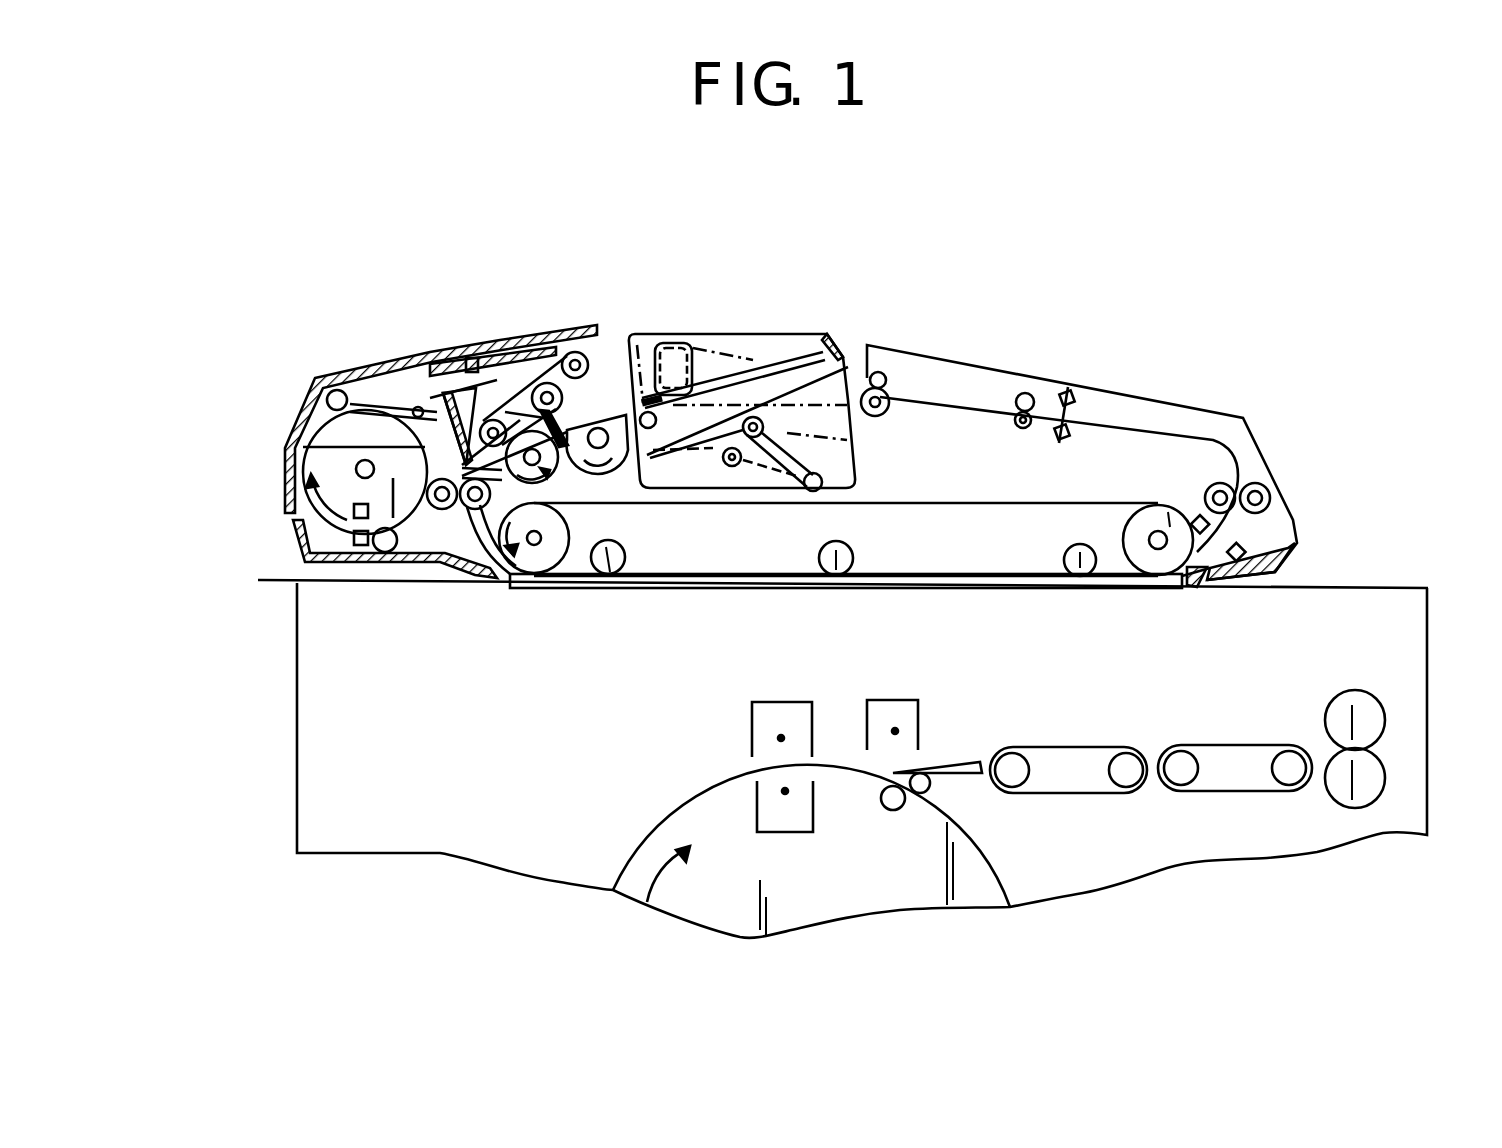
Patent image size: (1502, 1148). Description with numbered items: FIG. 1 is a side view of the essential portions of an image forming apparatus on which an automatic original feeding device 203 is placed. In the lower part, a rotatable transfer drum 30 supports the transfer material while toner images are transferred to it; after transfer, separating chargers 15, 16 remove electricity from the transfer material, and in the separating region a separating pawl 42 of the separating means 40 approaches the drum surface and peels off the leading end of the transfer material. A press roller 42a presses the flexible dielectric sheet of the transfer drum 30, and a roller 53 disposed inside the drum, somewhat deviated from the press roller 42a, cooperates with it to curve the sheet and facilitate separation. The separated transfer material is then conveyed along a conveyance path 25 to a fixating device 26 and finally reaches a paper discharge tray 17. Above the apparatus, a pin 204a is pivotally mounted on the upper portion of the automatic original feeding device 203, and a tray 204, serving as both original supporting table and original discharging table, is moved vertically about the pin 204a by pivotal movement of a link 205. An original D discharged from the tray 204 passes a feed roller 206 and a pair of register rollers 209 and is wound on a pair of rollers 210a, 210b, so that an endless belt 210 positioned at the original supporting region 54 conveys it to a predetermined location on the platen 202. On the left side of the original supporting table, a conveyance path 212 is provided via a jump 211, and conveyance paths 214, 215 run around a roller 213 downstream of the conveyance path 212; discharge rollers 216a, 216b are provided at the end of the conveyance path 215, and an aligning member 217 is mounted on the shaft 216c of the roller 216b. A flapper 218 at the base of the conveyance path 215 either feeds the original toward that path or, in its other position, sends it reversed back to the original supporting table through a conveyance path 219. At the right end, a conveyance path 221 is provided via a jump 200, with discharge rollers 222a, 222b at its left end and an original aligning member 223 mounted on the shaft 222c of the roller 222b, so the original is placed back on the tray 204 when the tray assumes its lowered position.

The separating charger 15 is at (757, 817).
The separating charger 16 is at (782, 702).
The paper discharge tray 17 is at (895, 700).
The conveyance path 25 is at (1287, 703).
The fixating device 26 is at (1360, 697).
The transfer drum 30 is at (1007, 897).
The separating means 40 is at (960, 705).
The separating pawl 42 is at (972, 760).
The press roller 42a is at (928, 792).
The roller 53 is at (893, 810).
The original supporting region 54 is at (735, 588).
The jump 200 is at (1190, 585).
The platen 202 is at (822, 588).
The automatic original feeding device 203 is at (712, 313).
The tray 204 is at (800, 337).
The pin 204a is at (653, 427).
The link 205 is at (840, 475).
The feed roller 206 is at (620, 452).
The register rollers 209 is at (470, 512).
The endless belt 210 is at (1025, 503).
The roller 210a is at (563, 563).
The roller 210b is at (1153, 517).
The jump 211 is at (485, 563).
The conveyance path 212 is at (436, 510).
The roller 213 is at (300, 432).
The conveyance path 214 is at (330, 563).
The conveyance path 215 is at (444, 375).
The discharge roller 216a is at (575, 337).
The discharge roller 216b is at (593, 337).
The shaft 216c is at (553, 333).
The aligning member 217 is at (615, 337).
The flapper 218 is at (427, 455).
The conveyance path 219 is at (303, 448).
The conveyance path 221 is at (1162, 430).
The discharge roller 222a is at (886, 380).
The discharge roller 222b is at (873, 417).
The shaft 222c is at (880, 417).
The original aligning member 223 is at (866, 372).
The original D is at (757, 337).